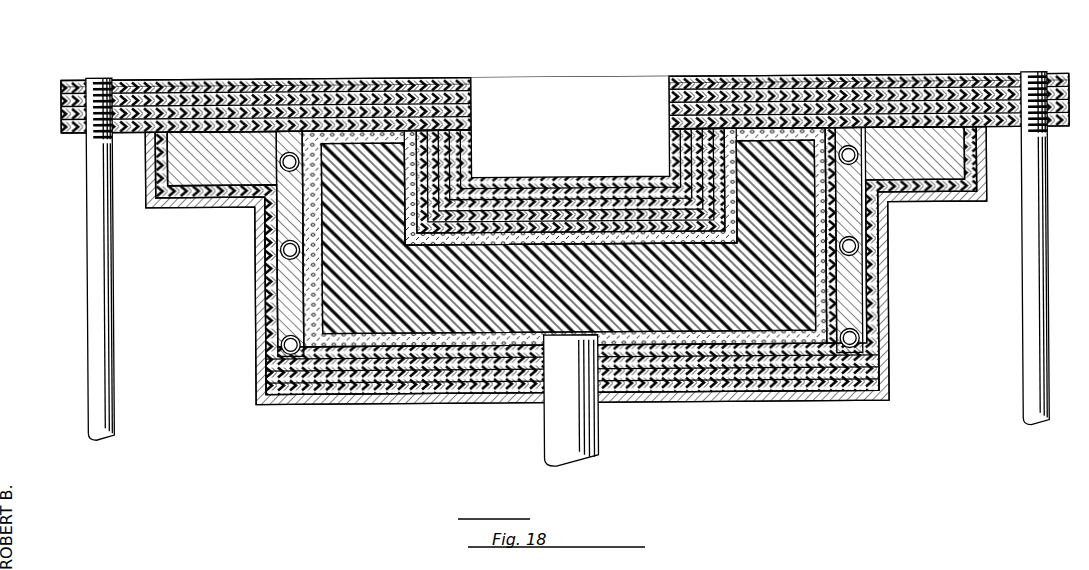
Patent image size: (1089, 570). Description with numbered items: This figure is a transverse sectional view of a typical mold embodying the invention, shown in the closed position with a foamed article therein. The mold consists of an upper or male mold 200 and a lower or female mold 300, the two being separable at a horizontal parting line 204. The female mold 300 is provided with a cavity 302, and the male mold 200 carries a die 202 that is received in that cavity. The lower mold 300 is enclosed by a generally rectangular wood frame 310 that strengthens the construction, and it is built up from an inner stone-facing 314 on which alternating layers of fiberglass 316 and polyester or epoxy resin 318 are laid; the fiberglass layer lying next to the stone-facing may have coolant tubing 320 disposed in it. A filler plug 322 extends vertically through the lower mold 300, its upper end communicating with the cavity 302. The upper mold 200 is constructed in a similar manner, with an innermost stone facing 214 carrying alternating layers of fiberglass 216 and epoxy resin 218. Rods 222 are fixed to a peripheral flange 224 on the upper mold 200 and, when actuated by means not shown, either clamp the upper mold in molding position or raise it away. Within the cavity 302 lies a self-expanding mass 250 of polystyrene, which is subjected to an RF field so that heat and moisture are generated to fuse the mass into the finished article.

The upper or male mold 200 is at (471, 63).
The die 202 is at (617, 175).
The horizontal parting line 204 is at (192, 130).
The innermost stone facing 214 is at (428, 142).
The fiberglass layers 216 is at (328, 105).
The epoxy resin layers 218 is at (405, 108).
The rods 222 is at (96, 323).
The peripheral flange 224 is at (72, 80).
The self-expanding mass 250 is at (273, 238).
The lower or female mold 300 is at (384, 437).
The cavity 302 is at (463, 330).
The rectangular wood frame 310 is at (204, 168).
The inner stone-facing 314 is at (417, 343).
The fiberglass layers 316 is at (345, 380).
The polyester or epoxy resin layers 318 is at (263, 350).
The coolant tubing 320 is at (275, 282).
The filler plug 322 is at (552, 427).